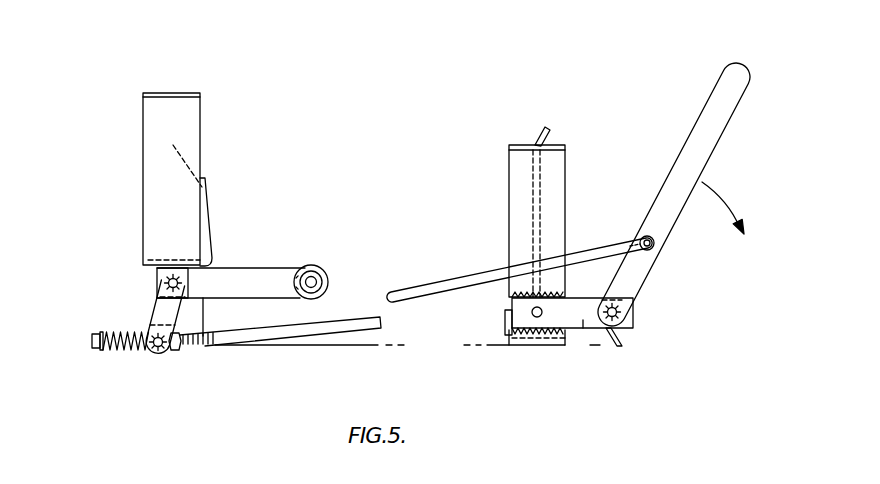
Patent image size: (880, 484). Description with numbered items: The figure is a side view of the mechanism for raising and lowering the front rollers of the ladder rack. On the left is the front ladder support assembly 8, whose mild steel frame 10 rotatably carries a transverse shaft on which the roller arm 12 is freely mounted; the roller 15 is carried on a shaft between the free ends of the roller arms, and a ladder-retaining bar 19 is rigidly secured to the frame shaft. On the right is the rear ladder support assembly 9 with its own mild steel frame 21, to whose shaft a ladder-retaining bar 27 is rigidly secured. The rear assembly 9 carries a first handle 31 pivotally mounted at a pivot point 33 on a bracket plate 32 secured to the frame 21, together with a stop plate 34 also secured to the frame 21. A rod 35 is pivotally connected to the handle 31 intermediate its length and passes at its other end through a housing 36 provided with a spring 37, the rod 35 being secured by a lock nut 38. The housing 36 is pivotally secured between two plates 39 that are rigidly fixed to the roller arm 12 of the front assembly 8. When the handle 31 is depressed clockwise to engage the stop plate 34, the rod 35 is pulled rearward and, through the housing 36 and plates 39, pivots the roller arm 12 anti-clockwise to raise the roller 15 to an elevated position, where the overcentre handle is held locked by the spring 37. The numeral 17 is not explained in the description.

The front ladder support assembly 8 is at (232, 143).
The rear ladder support assembly 9 is at (627, 122).
The frame 10 is at (192, 113).
The roller arm 12 is at (232, 282).
The roller 15 is at (325, 238).
The roller pin 17 is at (330, 275).
The ladder-retaining bar 19 is at (212, 215).
The frame 21 is at (512, 193).
The ladder-retaining bar 27 is at (540, 135).
The first handle 31 is at (722, 88).
The bracket plate 32 is at (582, 318).
The pivot point 33 is at (626, 304).
The stop plate 34 is at (628, 338).
The rod 35 is at (383, 325).
The housing 36 is at (170, 352).
The spring 37 is at (125, 355).
The lock nut 38 is at (97, 357).
The plates 39 is at (161, 305).